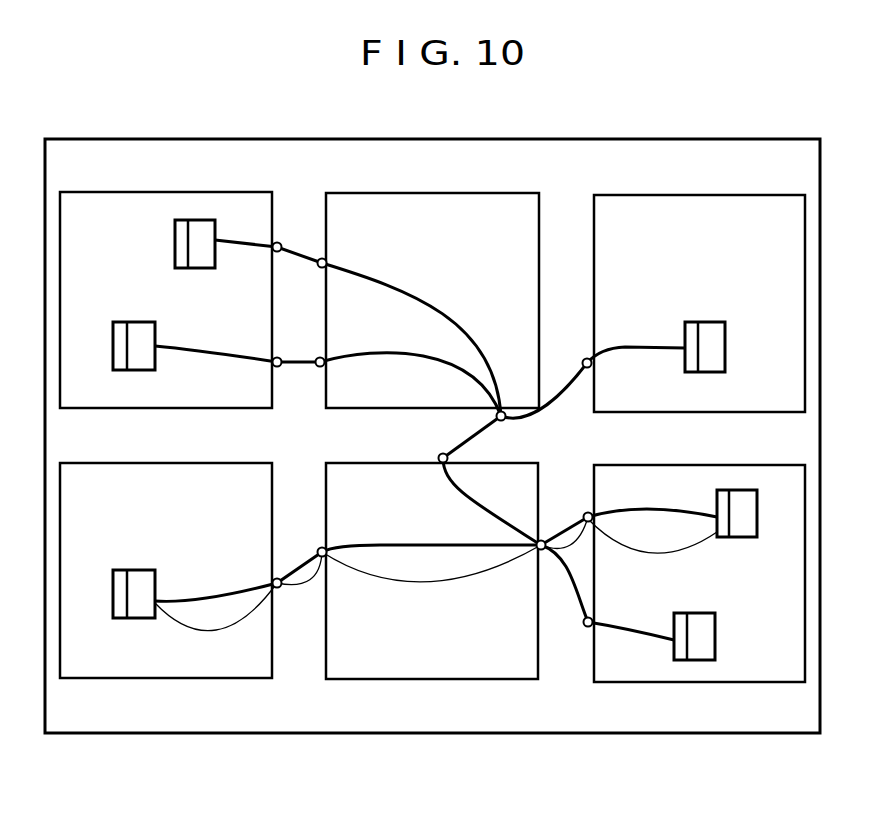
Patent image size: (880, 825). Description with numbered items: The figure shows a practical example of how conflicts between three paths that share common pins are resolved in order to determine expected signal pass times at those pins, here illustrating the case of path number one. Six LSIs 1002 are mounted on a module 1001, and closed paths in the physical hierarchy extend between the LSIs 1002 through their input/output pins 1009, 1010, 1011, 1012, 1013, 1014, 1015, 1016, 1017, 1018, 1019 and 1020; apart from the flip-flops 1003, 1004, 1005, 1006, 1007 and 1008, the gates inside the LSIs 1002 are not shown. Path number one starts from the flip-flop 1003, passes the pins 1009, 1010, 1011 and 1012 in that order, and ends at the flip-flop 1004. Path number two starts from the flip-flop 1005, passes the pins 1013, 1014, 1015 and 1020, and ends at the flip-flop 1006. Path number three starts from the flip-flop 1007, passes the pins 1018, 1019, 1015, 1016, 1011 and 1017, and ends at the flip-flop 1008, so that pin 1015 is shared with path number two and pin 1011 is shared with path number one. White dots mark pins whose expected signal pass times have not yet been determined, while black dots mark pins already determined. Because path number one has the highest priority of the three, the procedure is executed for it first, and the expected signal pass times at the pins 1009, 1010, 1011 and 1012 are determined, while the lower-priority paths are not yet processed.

The module 1001 is at (627, 140).
The LSI 1002 is at (225, 193).
The flip-flop 1003 is at (137, 618).
The flip-flop 1004 is at (743, 537).
The flip-flop 1005 is at (175, 243).
The flip-flop 1006 is at (716, 322).
The flip-flop 1007 is at (113, 345).
The flip-flop 1008 is at (715, 655).
The LSI input/output pin 1009 is at (273, 578).
The LSI input/output pin 1010 is at (319, 547).
The LSI input/output pin 1011 is at (545, 540).
The LSI input/output pin 1012 is at (591, 512).
The LSI input/output pin 1013 is at (278, 243).
The LSI input/output pin 1014 is at (324, 259).
The LSI input/output pin 1015 is at (504, 420).
The LSI input/output pin 1016 is at (440, 457).
The LSI input/output pin 1017 is at (587, 628).
The LSI input/output pin 1018 is at (276, 357).
The LSI input/output pin 1019 is at (320, 367).
The LSI input/output pin 1020 is at (590, 358).